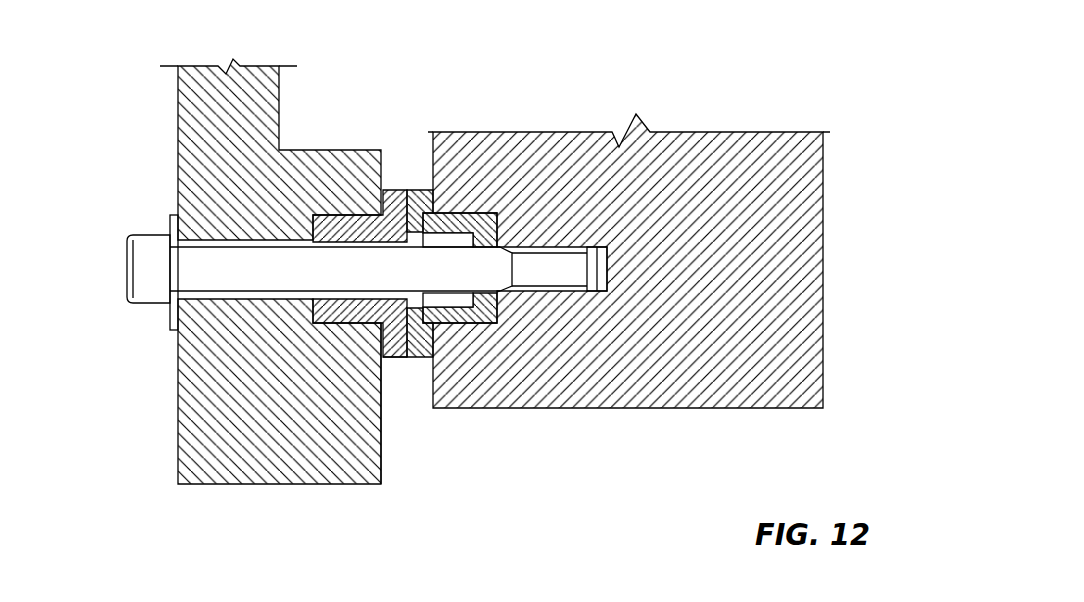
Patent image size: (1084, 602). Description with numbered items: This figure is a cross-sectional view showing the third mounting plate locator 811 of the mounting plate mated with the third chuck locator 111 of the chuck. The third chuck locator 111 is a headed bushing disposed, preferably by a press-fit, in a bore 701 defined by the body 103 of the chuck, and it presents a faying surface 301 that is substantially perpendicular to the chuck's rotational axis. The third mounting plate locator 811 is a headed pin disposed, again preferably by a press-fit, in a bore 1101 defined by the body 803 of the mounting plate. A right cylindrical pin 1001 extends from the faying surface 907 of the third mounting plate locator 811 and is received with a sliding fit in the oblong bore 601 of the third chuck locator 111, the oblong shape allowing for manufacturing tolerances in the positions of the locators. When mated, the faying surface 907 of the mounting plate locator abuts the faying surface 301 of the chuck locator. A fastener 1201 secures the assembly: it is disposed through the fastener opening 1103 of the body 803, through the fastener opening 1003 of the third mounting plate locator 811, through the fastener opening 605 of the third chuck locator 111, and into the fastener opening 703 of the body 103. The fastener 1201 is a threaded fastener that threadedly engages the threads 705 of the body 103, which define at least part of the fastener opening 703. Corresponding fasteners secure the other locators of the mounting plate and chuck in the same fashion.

The body 103 is at (813, 155).
The third chuck locator 111 is at (492, 208).
The faying surface 301 is at (404, 338).
The bore 601 is at (452, 215).
The fastener opening 605 is at (490, 292).
The bore 701 is at (456, 322).
The fastener opening 703 is at (567, 292).
The threads 705 is at (603, 268).
The body 803 is at (178, 478).
The third mounting plate locator 811 is at (380, 351).
The faying surface 907 is at (424, 358).
The pin 1001 is at (410, 225).
The fastener opening 1003 is at (341, 294).
The bore 1101 is at (337, 228).
The fastener opening 1103 is at (206, 297).
The fastener 1201 is at (158, 250).